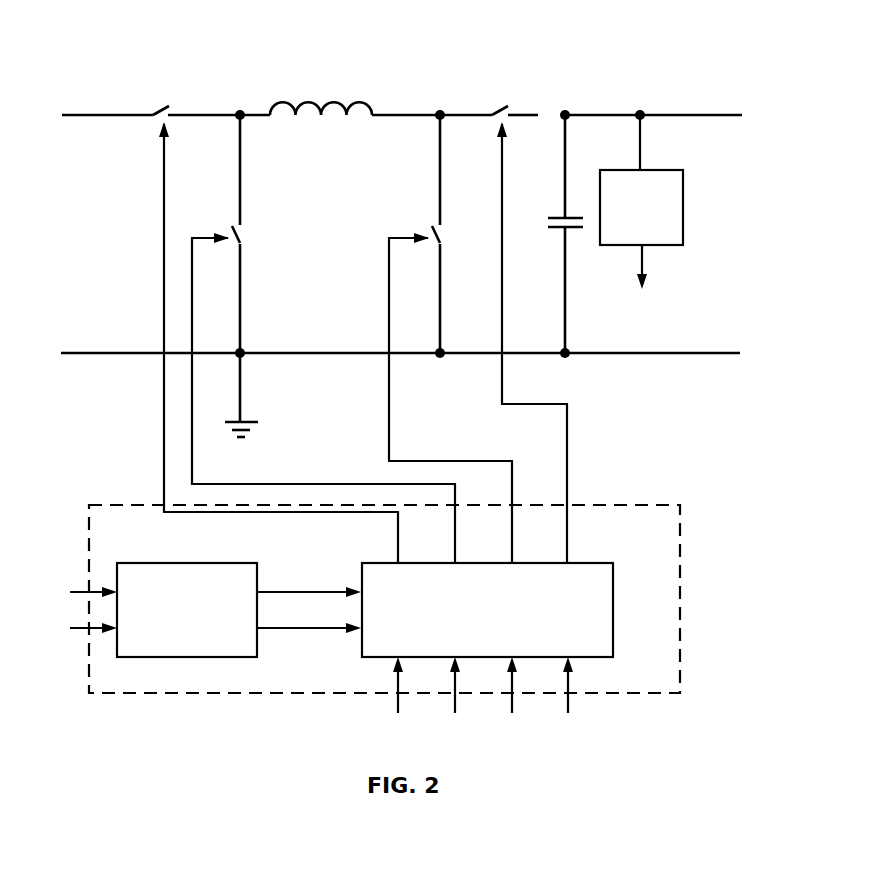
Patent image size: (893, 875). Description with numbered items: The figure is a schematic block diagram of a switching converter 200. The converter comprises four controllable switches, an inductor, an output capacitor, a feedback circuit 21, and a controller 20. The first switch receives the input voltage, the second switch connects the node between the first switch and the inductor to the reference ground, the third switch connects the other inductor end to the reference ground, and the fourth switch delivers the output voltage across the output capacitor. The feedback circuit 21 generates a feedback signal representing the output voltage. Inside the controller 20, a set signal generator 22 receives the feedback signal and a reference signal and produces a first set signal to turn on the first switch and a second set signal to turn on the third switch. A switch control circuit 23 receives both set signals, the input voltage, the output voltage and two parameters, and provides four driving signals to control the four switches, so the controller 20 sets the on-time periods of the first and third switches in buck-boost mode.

The switching converter 200 is at (710, 81).
The feedback circuit 21 is at (641, 216).
The controller 20 is at (680, 666).
The set signal generator 22 is at (141, 610).
The switch control circuit 23 is at (435, 657).